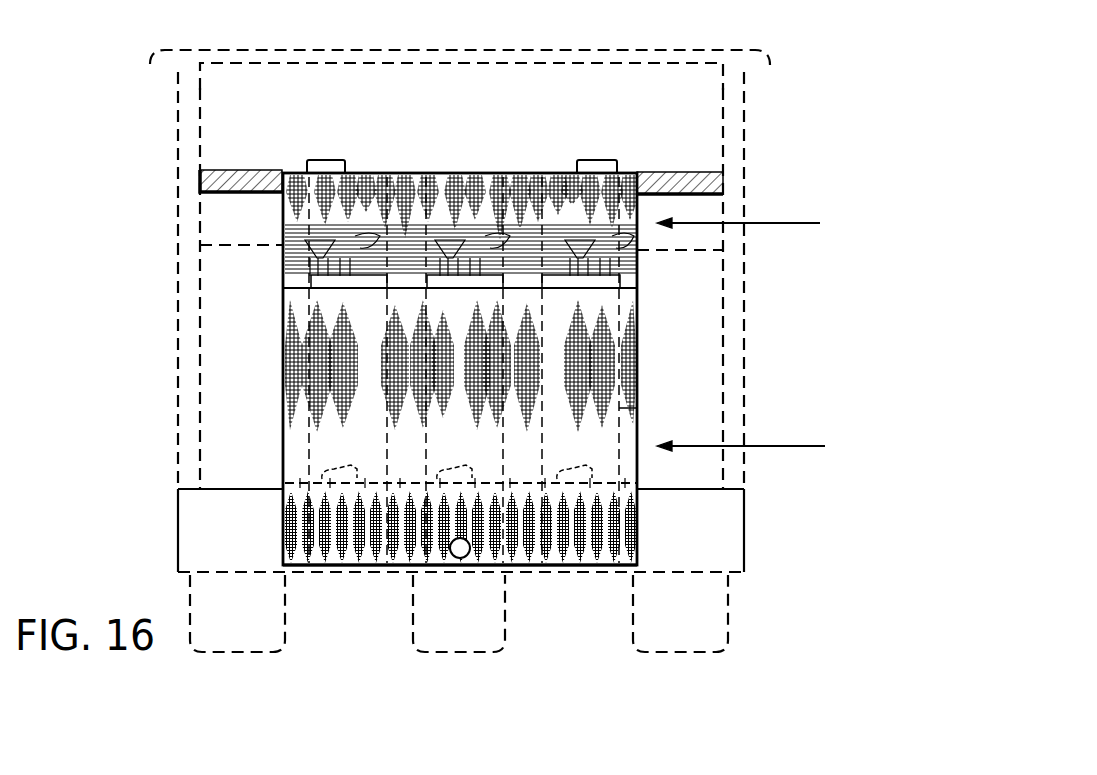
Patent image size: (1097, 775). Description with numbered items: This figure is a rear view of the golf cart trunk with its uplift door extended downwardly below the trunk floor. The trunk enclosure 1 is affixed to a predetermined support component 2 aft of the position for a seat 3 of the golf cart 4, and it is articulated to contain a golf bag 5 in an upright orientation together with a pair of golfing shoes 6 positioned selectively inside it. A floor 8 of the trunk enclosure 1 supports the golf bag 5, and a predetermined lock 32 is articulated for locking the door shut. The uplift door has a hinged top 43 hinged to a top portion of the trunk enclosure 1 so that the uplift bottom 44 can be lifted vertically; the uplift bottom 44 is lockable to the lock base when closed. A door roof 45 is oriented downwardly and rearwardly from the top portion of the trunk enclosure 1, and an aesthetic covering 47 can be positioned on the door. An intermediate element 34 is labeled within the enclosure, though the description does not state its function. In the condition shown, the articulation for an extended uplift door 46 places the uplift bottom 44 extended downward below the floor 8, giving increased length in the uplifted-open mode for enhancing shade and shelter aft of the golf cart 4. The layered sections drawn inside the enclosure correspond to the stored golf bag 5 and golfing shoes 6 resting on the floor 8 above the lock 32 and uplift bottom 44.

The trunk enclosure 1 is at (283, 436).
The support component 2 is at (233, 185).
The seat 3 is at (243, 246).
The golf cart 4 is at (782, 595).
The golf bag 5 is at (619, 408).
The golfing shoes 6 is at (583, 482).
The floor 8 is at (398, 485).
The lock 32 is at (462, 558).
The intermediate layer 34 is at (447, 281).
The hinged top 43 is at (455, 205).
The uplift bottom 44 is at (327, 567).
The door roof 45 is at (756, 225).
The extended uplift door 46 is at (755, 447).
The aesthetic covering 47 is at (527, 352).